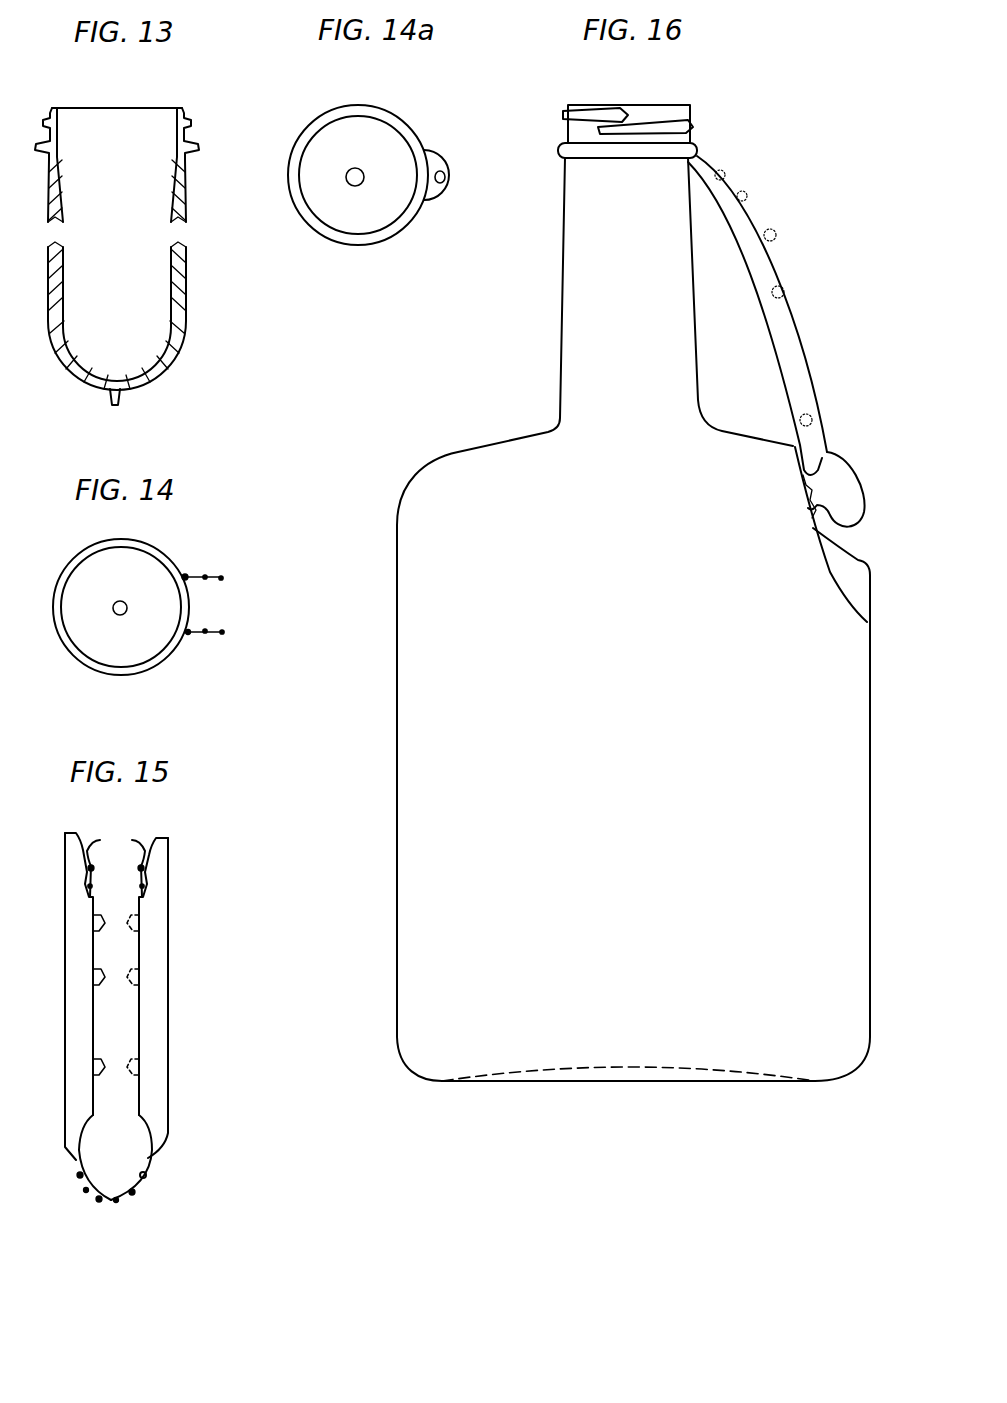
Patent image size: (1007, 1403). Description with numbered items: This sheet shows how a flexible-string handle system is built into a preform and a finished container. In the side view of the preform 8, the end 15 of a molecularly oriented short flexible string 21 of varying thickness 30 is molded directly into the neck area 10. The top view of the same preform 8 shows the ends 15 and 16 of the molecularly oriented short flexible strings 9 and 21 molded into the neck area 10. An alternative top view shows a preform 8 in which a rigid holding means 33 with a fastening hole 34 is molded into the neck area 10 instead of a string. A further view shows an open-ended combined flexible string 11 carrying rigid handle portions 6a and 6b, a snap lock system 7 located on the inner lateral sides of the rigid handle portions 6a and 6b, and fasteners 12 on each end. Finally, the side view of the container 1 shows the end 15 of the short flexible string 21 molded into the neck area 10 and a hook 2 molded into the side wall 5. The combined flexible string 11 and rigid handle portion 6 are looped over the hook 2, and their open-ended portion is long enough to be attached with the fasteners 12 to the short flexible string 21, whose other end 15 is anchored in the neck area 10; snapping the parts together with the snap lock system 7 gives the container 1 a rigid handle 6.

In FIG. 16, the container 1 is at (456, 455).
In FIG. 16, the hook 2 is at (853, 512).
In FIG. 16, the side wall 5 is at (868, 680).
In FIG. 15, the rigid handle portion 6 is at (117, 1016).
In FIG. 16, the rigid handle portion 6 is at (757, 337).
In FIG. 15, the rigid handle portion 6a is at (72, 1012).
In FIG. 15, the rigid handle portion 6b is at (156, 1010).
In FIG. 15, the snap lock system 7 is at (97, 973).
In FIG. 16, the snap lock system 7 is at (781, 297).
In FIG. 13, the preform 8 is at (60, 211).
In FIG. 14a, the preform 8 is at (298, 167).
In FIG. 14, the preform 8 is at (61, 597).
In FIG. 14, the short flexible string 9 is at (208, 576).
In FIG. 13, the neck area 10 is at (207, 147).
In FIG. 14a, the neck area 10 is at (398, 122).
In FIG. 14, the neck area 10 is at (152, 548).
In FIG. 16, the neck area 10 is at (700, 150).
In FIG. 15, the combined flexible string 11 is at (133, 1192).
In FIG. 16, the combined flexible string 11 is at (815, 453).
In FIG. 15, the fasteners 12 is at (96, 852).
In FIG. 16, the fasteners 12 is at (723, 182).
In FIG. 13, the end 15 is at (208, 148).
In FIG. 14, the end 15 is at (188, 575).
In FIG. 16, the end 15 is at (703, 156).
In FIG. 14, the end 16 is at (190, 636).
In FIG. 13, the short flexible string 21 is at (208, 151).
In FIG. 14, the short flexible string 21 is at (206, 634).
In FIG. 16, the short flexible string 21 is at (705, 160).
In FIG. 13, the varying thickness 30 is at (211, 149).
In FIG. 14a, the rigid holding means 33 is at (437, 160).
In FIG. 14a, the fastening hole 34 is at (442, 177).